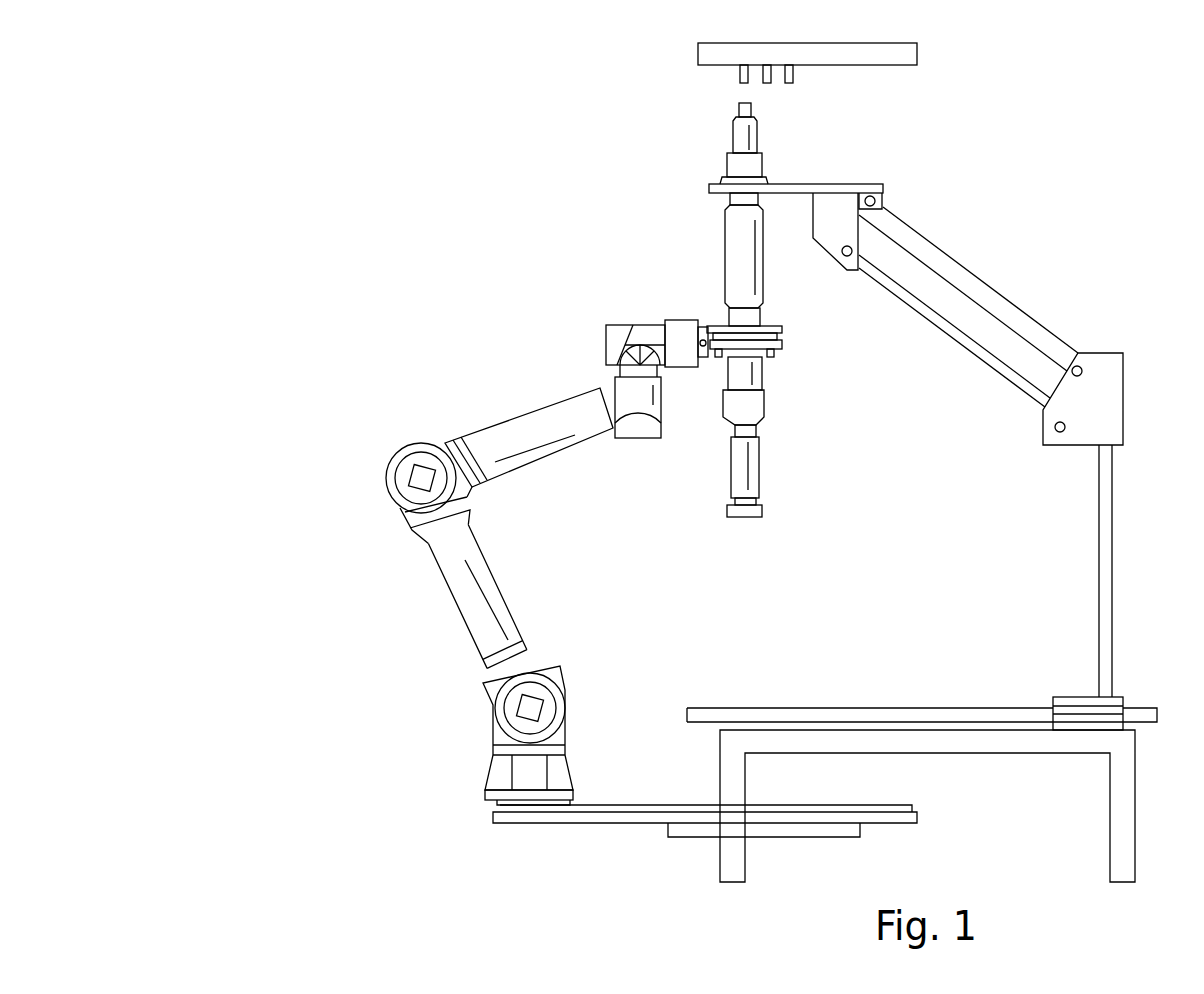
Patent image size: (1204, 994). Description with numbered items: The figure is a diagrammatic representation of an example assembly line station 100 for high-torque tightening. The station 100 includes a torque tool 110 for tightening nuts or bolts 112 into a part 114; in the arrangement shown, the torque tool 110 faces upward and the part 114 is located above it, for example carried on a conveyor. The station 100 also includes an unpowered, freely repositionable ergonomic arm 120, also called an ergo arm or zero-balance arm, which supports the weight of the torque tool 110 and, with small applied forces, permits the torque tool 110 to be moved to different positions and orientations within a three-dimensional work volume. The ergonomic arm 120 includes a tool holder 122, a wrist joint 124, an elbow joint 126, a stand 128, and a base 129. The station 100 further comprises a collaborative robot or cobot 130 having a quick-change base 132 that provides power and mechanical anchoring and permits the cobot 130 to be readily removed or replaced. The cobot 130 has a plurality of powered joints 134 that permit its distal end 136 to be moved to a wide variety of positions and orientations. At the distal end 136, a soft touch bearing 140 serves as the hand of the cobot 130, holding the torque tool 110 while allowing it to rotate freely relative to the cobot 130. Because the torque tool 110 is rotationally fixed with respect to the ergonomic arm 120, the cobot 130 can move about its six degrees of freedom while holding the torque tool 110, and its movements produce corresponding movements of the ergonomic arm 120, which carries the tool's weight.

The assembly line station 100 is at (256, 82).
The torque tool 110 is at (716, 230).
The nuts or bolts 112 is at (738, 72).
The part 114 is at (917, 52).
The ergonomic arm 120 is at (1006, 243).
The tool holder 122 is at (812, 184).
The wrist joint 124 is at (829, 256).
The elbow joint 126 is at (1123, 395).
The stand 128 is at (1112, 540).
The base 129 is at (1123, 700).
The cobot 130 is at (377, 408).
The quick-change base 132 is at (485, 797).
The powered joints 134 is at (565, 710).
The distal end 136 is at (660, 367).
The soft touch bearing 140 is at (708, 306).